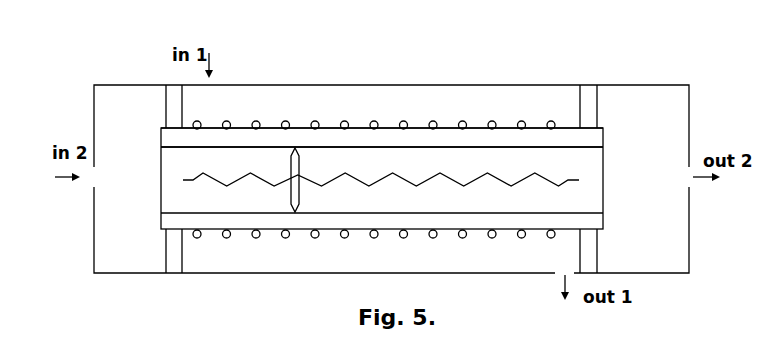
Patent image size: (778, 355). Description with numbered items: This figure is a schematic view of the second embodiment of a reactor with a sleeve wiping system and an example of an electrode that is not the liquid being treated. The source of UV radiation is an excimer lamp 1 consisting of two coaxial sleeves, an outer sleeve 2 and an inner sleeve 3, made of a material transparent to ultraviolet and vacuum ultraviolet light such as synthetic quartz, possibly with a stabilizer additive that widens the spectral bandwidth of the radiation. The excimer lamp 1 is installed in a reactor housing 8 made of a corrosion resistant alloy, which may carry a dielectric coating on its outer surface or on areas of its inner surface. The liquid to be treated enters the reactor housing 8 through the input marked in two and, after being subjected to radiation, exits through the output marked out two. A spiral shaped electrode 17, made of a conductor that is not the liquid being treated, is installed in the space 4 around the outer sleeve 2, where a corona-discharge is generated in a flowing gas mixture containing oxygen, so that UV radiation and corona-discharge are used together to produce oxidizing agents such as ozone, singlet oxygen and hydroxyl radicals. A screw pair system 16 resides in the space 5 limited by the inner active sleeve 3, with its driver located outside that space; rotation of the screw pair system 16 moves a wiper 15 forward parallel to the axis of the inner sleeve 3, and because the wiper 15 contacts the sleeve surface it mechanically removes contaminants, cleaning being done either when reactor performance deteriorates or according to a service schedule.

The excimer lamp 1 is at (367, 137).
The outer sleeve 2 is at (208, 127).
The inner sleeve 3 is at (527, 148).
The space around outer sleeve 4 is at (563, 107).
The space inside inner sleeve 5 is at (468, 166).
The reactor housing 8 is at (638, 85).
The partition / baffle 15 is at (296, 176).
The screw pair system 16 is at (399, 177).
The electrode 17 is at (257, 124).